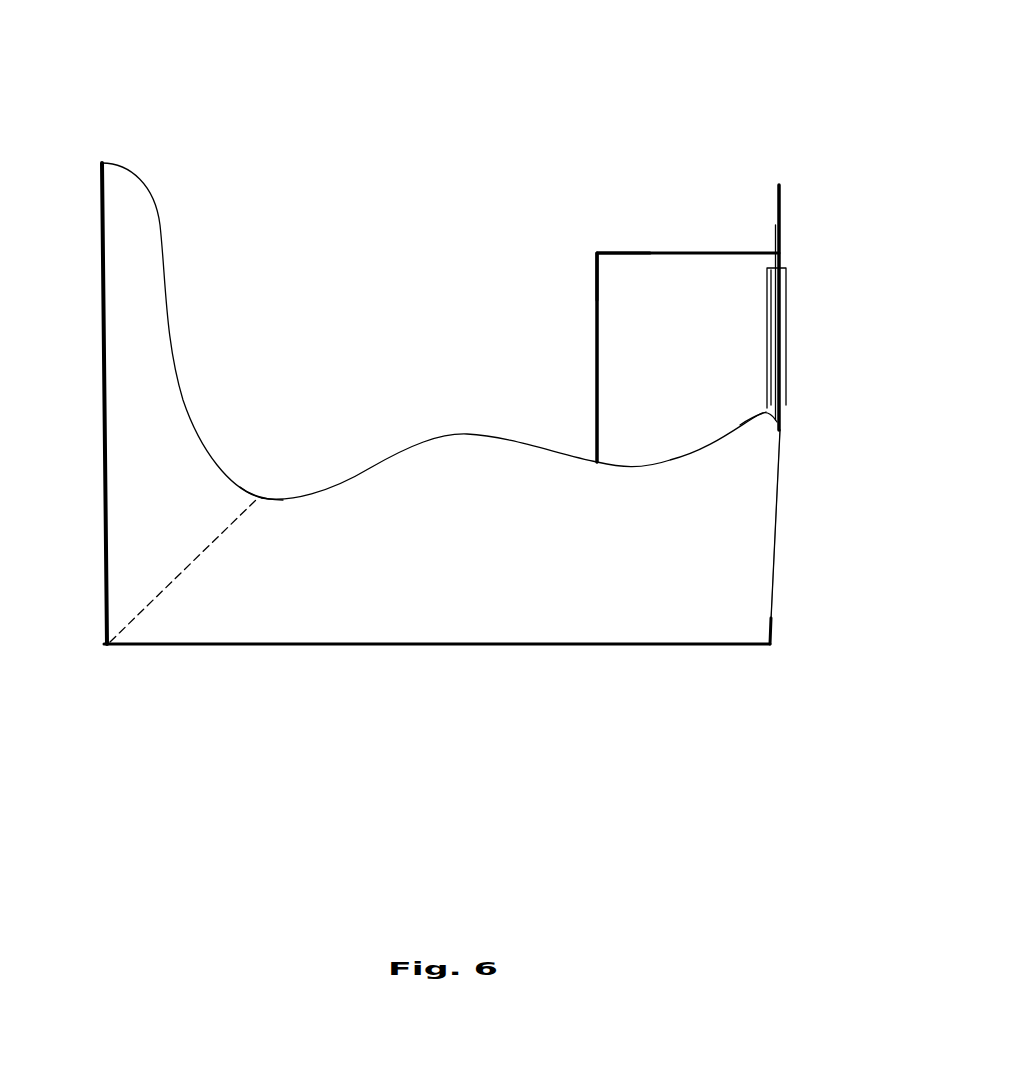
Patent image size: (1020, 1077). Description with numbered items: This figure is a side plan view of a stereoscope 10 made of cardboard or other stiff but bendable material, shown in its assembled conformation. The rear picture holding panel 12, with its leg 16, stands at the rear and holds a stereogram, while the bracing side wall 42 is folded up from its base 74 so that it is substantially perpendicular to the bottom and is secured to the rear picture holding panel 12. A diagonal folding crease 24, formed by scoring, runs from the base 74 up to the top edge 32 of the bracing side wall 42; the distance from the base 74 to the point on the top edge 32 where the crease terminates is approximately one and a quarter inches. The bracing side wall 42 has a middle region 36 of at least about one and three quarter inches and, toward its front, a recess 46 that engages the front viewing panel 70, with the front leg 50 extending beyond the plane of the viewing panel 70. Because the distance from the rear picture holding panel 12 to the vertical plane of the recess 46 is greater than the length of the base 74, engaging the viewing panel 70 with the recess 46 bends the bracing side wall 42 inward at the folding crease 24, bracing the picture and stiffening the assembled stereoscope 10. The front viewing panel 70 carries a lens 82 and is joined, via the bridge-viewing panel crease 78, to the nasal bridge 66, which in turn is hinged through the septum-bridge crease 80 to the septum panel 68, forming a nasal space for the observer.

The stereoscope 10 is at (737, 96).
The rear picture holding panel 12 is at (101, 241).
The leg 16 is at (104, 401).
The diagonal folding crease 24 is at (185, 572).
The top edge 32 is at (262, 497).
The middle region 36 is at (463, 430).
The bracing side wall 42 is at (593, 600).
The recess 46 is at (780, 418).
The front leg 50 is at (776, 530).
The nasal bridge 66 is at (687, 253).
The septum panel 68 is at (597, 322).
The front viewing panel 70 is at (783, 228).
The base 74 is at (437, 645).
The bridge-viewing panel crease 78 is at (777, 224).
The septum-bridge crease 80 is at (597, 251).
The lens 82 is at (786, 338).